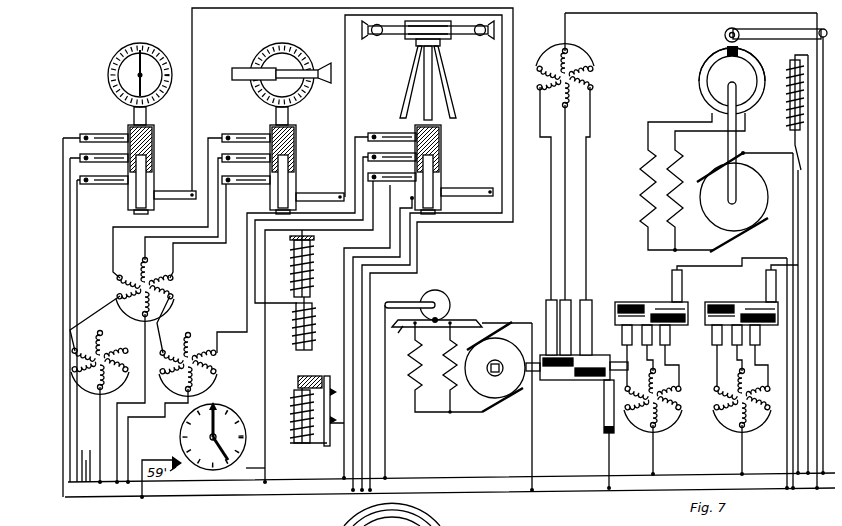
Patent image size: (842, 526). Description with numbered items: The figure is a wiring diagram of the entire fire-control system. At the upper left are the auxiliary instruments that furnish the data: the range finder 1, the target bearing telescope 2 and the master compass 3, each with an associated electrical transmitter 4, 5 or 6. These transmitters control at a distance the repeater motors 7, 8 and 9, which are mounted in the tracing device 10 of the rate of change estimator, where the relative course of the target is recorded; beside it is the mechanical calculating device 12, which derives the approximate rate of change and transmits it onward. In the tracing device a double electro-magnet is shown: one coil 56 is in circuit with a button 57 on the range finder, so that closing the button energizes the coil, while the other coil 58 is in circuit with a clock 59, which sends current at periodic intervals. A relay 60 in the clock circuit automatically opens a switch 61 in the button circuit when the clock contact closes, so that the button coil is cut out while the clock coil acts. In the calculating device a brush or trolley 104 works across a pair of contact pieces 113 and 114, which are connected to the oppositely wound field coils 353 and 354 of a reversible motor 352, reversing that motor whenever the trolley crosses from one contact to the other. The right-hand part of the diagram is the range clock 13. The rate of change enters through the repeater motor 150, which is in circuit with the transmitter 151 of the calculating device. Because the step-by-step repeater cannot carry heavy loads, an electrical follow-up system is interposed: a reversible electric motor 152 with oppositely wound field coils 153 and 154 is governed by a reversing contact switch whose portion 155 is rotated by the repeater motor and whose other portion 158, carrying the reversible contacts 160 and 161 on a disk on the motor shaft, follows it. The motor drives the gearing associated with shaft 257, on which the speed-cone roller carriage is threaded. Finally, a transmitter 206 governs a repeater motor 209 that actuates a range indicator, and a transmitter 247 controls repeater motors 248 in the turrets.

The range finder 1 is at (452, 36).
The target bearing telescope 2 is at (268, 52).
The master compass 3 is at (118, 58).
The electrical transmitter 4 is at (443, 172).
The electrical transmitter 5 is at (297, 166).
The electrical transmitter 6 is at (153, 160).
The repeater motor 7 is at (222, 351).
The repeater motor 8 is at (172, 278).
The repeater motor 9 is at (130, 350).
The tracing device 10 is at (217, 289).
The mechanical calculating device 12 is at (458, 389).
The receiving apparatus 13 is at (691, 70).
The coil 56 is at (311, 268).
The button 57 is at (411, 197).
The coil 58 is at (312, 321).
The clock 59 is at (233, 418).
The relay 60 is at (295, 420).
The switch 61 is at (322, 376).
The brush or trolley 104 is at (438, 288).
The contact piece 113 is at (477, 323).
The contact piece 114 is at (395, 336).
The repeater motor 150 is at (592, 69).
The transmitter 151 is at (572, 381).
The reversible electric motor 152 is at (745, 201).
The field coil 153 is at (641, 207).
The field coil 154 is at (681, 176).
The switch portion 155 is at (726, 33).
The switch portion 158 is at (732, 126).
The reversible contact 160 is at (706, 70).
The reversible contact 161 is at (756, 67).
The transmitter 206 is at (663, 302).
The repeater motor 209 is at (670, 393).
The transmitter 247 is at (733, 302).
The repeater motor 248 is at (758, 394).
The shaft 257 is at (789, 116).
The reversible motor 352 is at (495, 367).
The field coil 353 is at (410, 388).
The field coil 354 is at (448, 388).